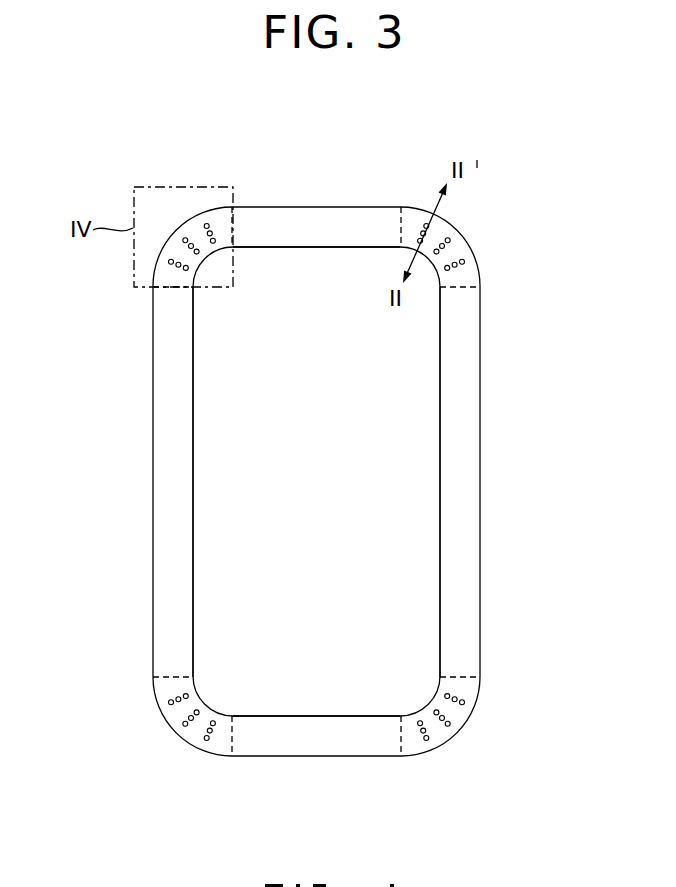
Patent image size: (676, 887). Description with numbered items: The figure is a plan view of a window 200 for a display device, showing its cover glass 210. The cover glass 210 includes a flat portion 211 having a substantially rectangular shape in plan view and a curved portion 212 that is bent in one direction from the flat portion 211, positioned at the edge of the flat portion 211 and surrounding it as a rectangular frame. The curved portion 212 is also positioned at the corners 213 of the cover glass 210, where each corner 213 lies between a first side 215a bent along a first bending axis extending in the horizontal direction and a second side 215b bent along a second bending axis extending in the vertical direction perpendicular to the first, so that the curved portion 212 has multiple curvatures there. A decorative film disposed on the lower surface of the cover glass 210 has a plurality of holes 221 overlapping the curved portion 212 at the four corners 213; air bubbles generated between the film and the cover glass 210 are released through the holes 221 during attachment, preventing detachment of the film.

The window 200 is at (195, 138).
The cover glass 210 is at (242, 145).
The flat portion 211 is at (265, 268).
The curved portion 212 is at (320, 219).
The corner 213 is at (425, 196).
The first side 215a is at (376, 206).
The second side 215b is at (154, 480).
The holes 221 is at (449, 238).